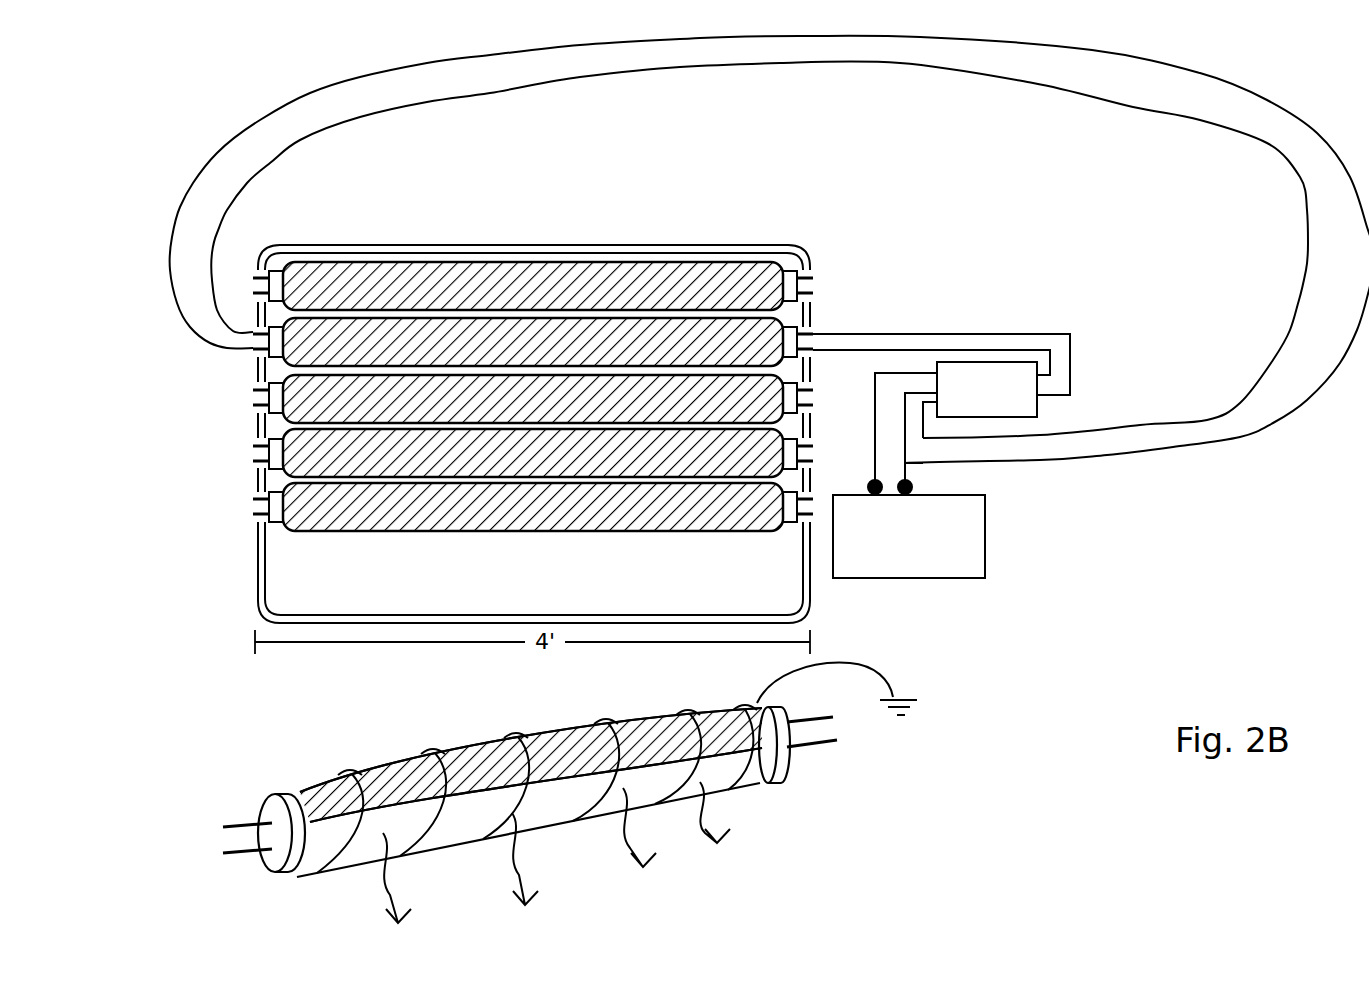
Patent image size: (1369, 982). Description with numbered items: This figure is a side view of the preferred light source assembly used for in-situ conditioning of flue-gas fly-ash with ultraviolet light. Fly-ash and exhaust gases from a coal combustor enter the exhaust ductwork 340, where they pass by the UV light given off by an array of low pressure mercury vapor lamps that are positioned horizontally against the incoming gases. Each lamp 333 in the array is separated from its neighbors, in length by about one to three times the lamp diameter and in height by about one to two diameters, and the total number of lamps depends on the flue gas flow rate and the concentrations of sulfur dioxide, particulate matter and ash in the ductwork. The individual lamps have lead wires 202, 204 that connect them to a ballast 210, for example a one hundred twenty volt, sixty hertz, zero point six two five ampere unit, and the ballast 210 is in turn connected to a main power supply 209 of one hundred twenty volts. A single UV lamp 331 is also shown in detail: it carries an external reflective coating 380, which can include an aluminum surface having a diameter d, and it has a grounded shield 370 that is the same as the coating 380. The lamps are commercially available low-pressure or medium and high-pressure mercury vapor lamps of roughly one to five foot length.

The lead wire 202 is at (1092, 50).
The lead wire 204 is at (923, 352).
The main power supply 209 is at (963, 560).
The ballast 210 is at (1030, 407).
The UV lamp 331 is at (787, 773).
The lamp 333 is at (808, 267).
The exhaust ductwork 340 is at (592, 245).
The grounded shield 370 is at (905, 707).
The external reflective coating 380 is at (320, 775).